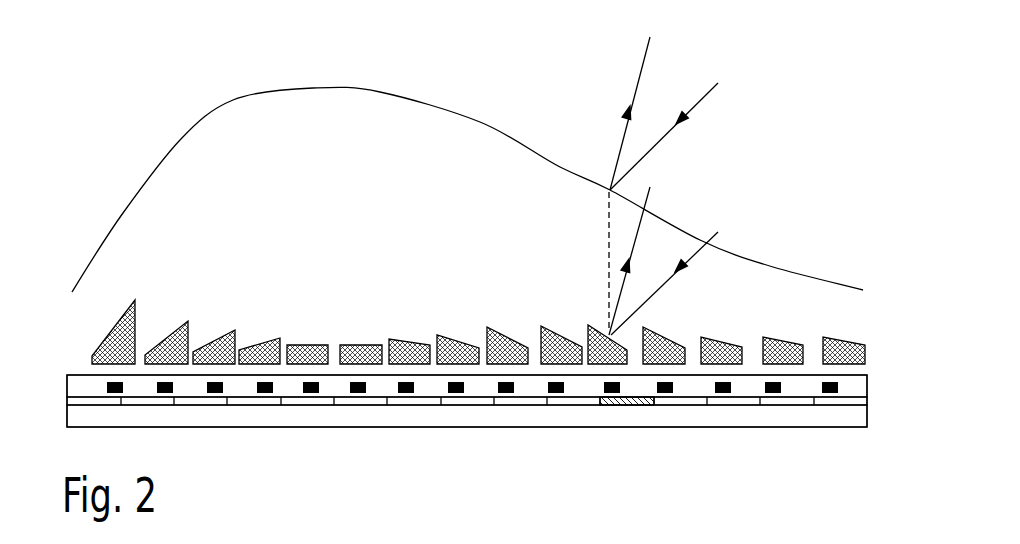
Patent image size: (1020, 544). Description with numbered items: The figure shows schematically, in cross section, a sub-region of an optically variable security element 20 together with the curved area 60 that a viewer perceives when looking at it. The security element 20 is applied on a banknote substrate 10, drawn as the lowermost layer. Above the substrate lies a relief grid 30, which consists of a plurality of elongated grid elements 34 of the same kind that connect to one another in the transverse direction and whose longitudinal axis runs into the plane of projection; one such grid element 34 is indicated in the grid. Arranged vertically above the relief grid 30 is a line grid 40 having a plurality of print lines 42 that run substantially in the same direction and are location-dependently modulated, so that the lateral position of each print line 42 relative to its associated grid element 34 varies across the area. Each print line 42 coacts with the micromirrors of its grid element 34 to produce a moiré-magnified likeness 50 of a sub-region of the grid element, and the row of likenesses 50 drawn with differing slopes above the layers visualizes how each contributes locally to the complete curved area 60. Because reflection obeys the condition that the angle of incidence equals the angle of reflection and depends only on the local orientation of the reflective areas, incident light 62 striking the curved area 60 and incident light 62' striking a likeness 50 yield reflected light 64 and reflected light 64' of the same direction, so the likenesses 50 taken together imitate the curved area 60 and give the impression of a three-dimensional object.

The banknote substrate 10 is at (860, 418).
The optically variable security element 20 is at (62, 362).
The relief grid 30 is at (860, 400).
The grid element 34 is at (630, 405).
The line grid 40 is at (860, 383).
The print line 42 is at (603, 387).
The moiré-magnified likeness 50 is at (361, 343).
The curved area 60 is at (312, 87).
The incident light 62 is at (672, 122).
The reflected light 64 is at (636, 98).
The incident light 62' is at (675, 269).
The reflected light 64' is at (641, 246).